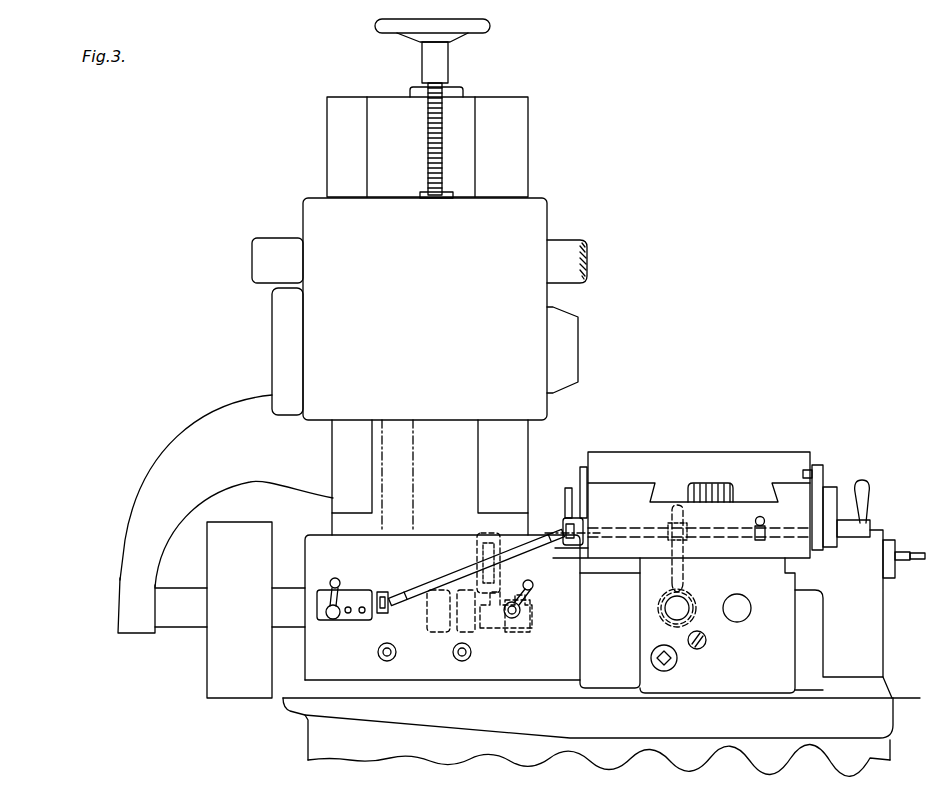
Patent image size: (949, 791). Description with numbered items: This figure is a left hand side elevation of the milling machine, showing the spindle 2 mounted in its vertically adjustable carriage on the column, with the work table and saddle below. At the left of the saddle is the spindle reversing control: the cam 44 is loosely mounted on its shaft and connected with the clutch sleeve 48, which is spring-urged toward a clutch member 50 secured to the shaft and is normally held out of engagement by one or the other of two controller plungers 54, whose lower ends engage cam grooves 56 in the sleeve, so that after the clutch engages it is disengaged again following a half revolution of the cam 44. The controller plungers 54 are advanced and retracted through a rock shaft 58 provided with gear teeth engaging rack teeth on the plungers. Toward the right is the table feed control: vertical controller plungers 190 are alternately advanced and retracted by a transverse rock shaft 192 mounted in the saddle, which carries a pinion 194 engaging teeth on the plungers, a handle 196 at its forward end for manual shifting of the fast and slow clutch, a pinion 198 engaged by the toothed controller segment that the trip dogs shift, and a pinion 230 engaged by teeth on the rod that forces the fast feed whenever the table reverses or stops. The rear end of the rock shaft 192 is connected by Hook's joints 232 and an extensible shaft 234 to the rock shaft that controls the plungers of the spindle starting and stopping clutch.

The spindle 2 is at (573, 328).
The Hook's joints 232 is at (383, 592).
The extensible shaft 234 is at (462, 572).
The rock shaft 58 is at (490, 533).
The controller plungers 54 is at (503, 572).
The clutch member 50 is at (530, 627).
The cam 44 is at (437, 633).
The clutch sleeve 48 is at (474, 631).
The cam grooves 56 is at (497, 630).
The pinion 194 is at (668, 527).
The rock shaft 192 is at (736, 533).
The pinion 230 is at (758, 540).
The controller plungers 190 is at (683, 572).
The handle 196 is at (867, 500).
The pinion 198 is at (822, 548).